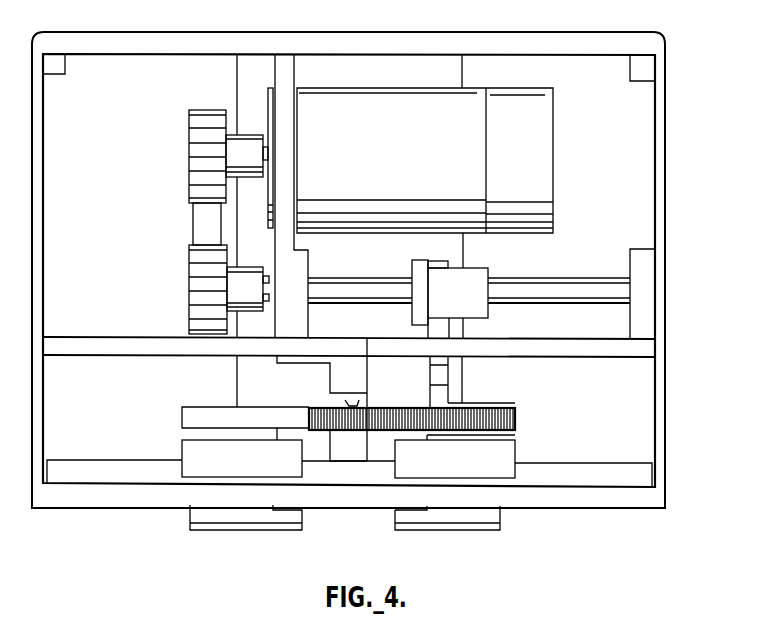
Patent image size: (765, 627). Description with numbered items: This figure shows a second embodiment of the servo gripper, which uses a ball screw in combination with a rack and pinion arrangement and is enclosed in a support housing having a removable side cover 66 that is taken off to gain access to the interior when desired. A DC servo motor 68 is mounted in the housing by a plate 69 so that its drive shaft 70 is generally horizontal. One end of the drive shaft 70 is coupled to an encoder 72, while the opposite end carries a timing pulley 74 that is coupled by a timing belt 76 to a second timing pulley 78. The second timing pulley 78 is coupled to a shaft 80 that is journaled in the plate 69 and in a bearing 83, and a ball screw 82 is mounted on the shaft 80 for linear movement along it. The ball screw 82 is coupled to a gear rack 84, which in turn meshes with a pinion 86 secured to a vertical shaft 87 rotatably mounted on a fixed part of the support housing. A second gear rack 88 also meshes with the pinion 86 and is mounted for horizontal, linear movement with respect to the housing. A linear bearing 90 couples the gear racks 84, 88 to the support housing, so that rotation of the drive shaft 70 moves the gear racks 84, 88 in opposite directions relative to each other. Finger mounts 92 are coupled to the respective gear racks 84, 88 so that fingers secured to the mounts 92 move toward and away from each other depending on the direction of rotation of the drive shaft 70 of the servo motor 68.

The side cover 66 is at (667, 449).
The DC servo motor 68 is at (396, 118).
The plate 69 is at (288, 217).
The drive shaft 70 is at (262, 148).
The encoder 72 is at (537, 145).
The timing pulley 74 is at (189, 168).
The timing belt 76 is at (193, 215).
The second timing pulley 78 is at (189, 270).
The shaft 80 is at (355, 287).
The ball screw 82 is at (492, 283).
The bearing 83 is at (645, 308).
The gear rack 84 is at (516, 424).
The pinion 86 is at (344, 433).
The vertical shaft 87 is at (352, 401).
The second gear rack 88 is at (210, 418).
The linear bearing 90 is at (183, 468).
The finger mounts 92 is at (413, 532).